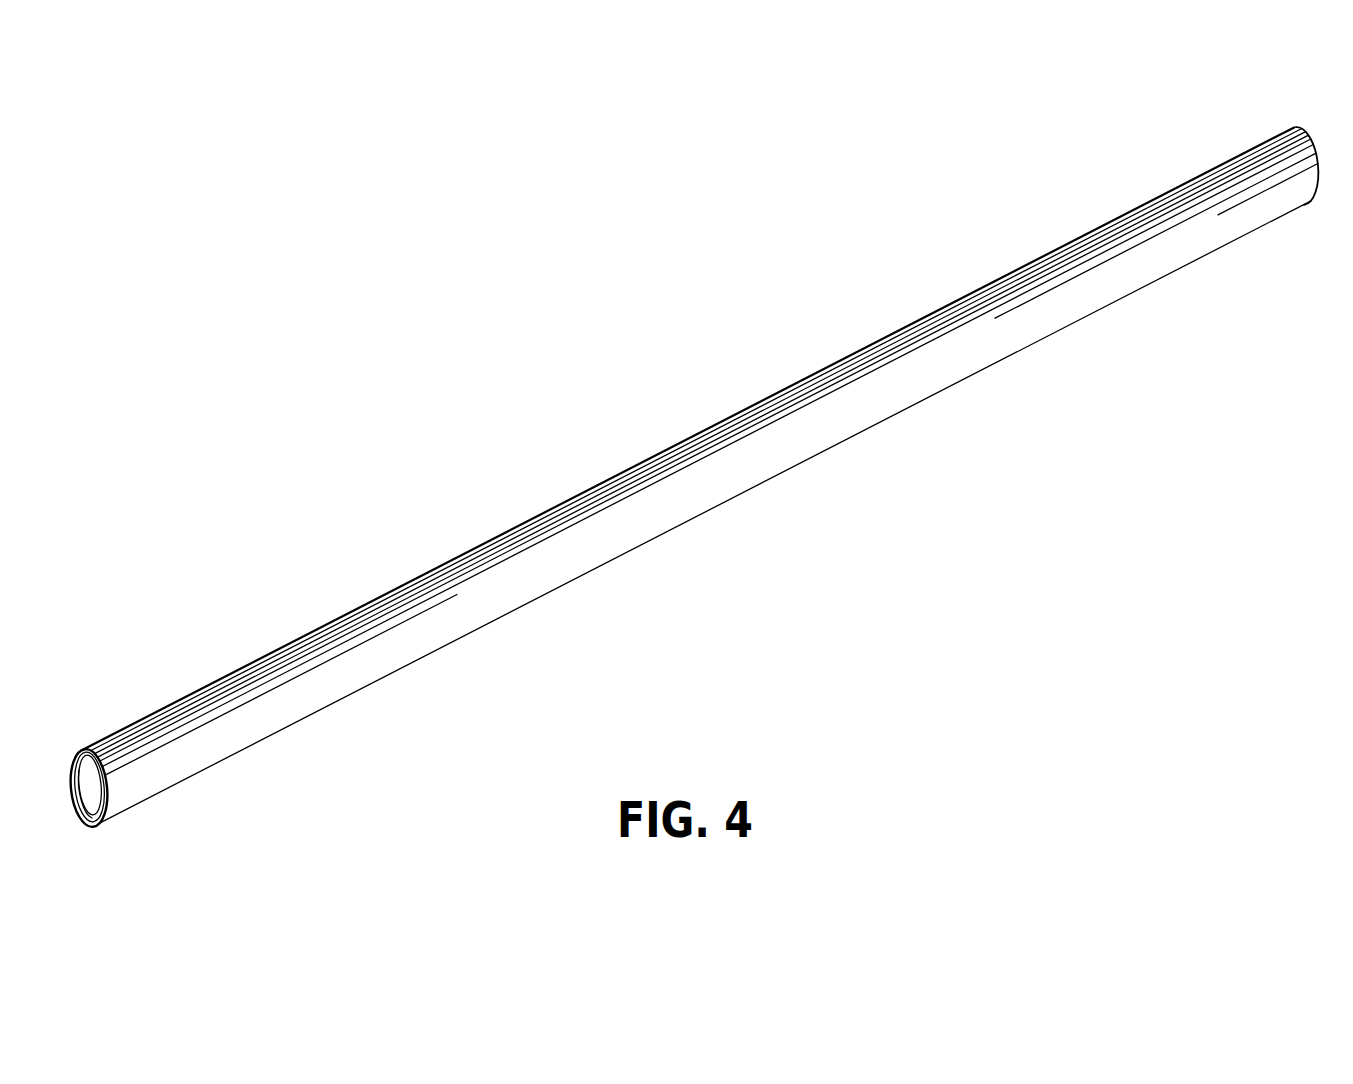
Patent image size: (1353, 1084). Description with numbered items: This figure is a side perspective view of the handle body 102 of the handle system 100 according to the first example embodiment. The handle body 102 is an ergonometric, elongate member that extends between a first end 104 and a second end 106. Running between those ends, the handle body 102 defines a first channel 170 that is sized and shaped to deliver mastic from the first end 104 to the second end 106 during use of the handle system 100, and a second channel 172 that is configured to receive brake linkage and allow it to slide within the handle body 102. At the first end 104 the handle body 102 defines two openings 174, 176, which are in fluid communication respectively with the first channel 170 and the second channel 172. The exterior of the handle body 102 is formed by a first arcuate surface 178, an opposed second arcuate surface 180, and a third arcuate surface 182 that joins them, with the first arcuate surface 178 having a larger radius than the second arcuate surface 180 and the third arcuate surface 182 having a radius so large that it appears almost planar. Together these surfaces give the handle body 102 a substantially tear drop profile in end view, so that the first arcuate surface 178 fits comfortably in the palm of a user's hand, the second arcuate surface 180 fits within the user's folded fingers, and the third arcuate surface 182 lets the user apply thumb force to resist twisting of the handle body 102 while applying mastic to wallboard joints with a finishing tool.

The handle system 100 is at (532, 277).
The handle body 102 is at (693, 422).
The first end 104 is at (103, 835).
The second end 106 is at (1290, 117).
The first channel 170 is at (97, 785).
The second channel 172 is at (90, 813).
The opening 174 is at (90, 764).
The opening 176 is at (103, 818).
The first arcuate surface 178 is at (453, 578).
The second arcuate surface 180 is at (953, 387).
The third arcuate surface 182 is at (610, 535).